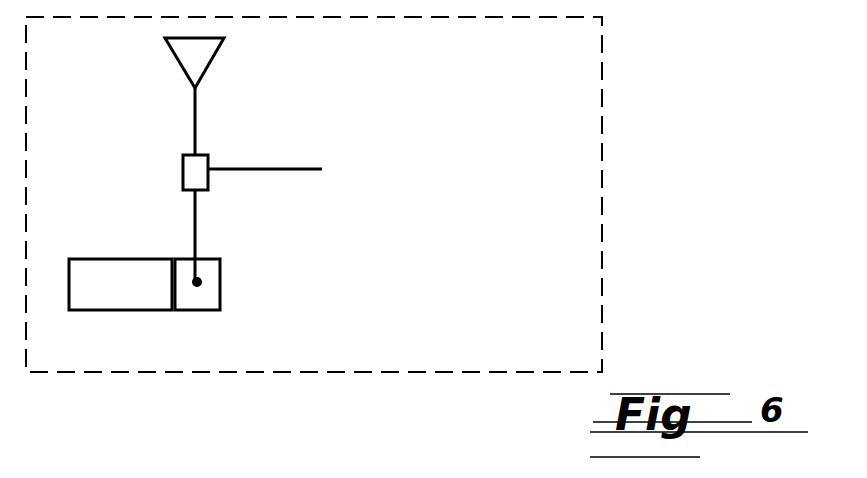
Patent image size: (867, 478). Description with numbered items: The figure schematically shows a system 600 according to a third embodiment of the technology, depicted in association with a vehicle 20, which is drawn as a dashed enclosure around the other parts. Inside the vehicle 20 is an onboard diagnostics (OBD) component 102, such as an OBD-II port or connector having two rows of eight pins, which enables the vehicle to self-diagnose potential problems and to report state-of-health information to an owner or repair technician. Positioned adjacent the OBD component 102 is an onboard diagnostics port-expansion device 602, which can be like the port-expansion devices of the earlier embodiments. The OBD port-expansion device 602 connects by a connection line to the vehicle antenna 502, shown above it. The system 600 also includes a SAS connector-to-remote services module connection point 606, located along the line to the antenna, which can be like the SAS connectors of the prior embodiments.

The vehicle 20 is at (351, 70).
The vehicle antenna 502 is at (168, 125).
The SAS connector-to-remote services module connection point 606 is at (206, 152).
The onboard diagnostics component 102 is at (132, 258).
The onboard diagnostics port-expansion device 602 is at (221, 288).
The system 600 is at (432, 157).